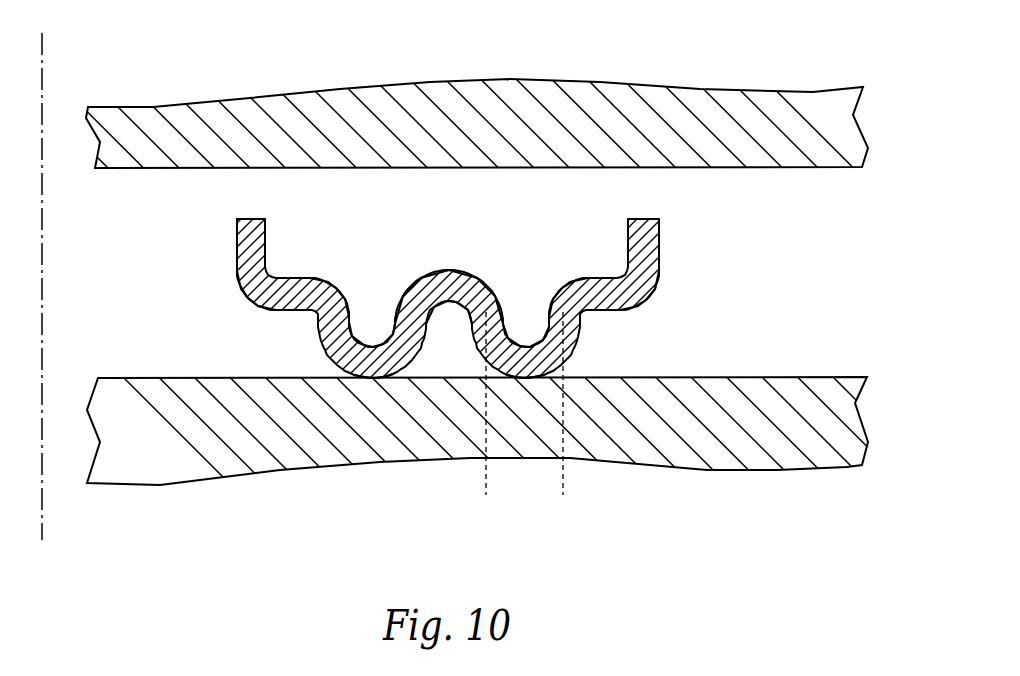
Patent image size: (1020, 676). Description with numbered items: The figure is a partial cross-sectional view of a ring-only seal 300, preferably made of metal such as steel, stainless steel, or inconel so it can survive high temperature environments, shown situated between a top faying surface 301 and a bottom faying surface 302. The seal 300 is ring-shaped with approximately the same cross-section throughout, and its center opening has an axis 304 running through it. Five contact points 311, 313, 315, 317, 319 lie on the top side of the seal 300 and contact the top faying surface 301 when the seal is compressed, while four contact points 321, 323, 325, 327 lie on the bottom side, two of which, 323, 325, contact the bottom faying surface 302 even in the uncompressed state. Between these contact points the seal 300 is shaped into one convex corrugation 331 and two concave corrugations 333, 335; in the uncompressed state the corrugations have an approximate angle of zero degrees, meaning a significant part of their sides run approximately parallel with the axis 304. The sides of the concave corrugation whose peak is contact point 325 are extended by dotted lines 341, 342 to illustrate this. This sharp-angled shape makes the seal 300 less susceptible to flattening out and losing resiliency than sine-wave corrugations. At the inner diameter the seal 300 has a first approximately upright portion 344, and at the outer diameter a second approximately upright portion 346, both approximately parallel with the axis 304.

The ring seal 300 is at (212, 293).
The top faying surface 301 is at (712, 110).
The bottom faying surface 302 is at (737, 440).
The axis 304 is at (42, 62).
The contact point 311 is at (265, 218).
The contact point 313 is at (333, 284).
The contact point 315 is at (447, 269).
The contact point 317 is at (562, 290).
The contact point 319 is at (628, 218).
The contact point 321 is at (247, 297).
The contact point 323 is at (370, 378).
The contact point 325 is at (522, 378).
The contact point 327 is at (643, 297).
The convex corrugation 331 is at (436, 360).
The concave corrugation 333 is at (376, 312).
The concave corrugation 335 is at (521, 308).
The extended dotted line 341 is at (485, 468).
The extended dotted line 342 is at (565, 472).
The first approximately upright portion 344 is at (237, 258).
The second approximately upright portion 346 is at (660, 236).